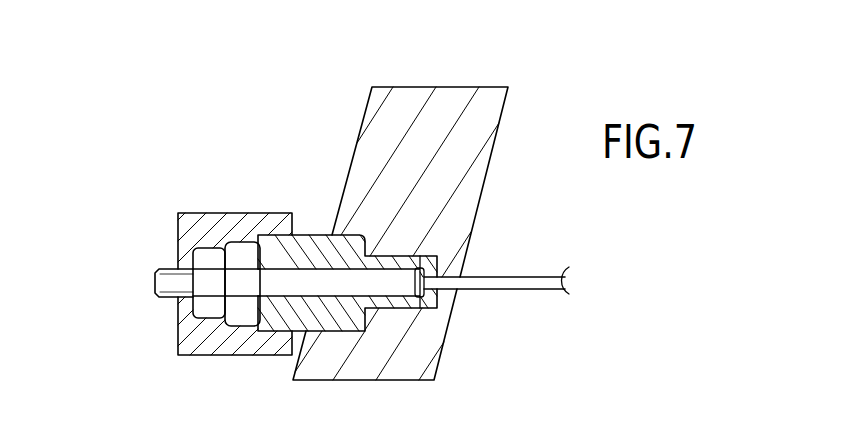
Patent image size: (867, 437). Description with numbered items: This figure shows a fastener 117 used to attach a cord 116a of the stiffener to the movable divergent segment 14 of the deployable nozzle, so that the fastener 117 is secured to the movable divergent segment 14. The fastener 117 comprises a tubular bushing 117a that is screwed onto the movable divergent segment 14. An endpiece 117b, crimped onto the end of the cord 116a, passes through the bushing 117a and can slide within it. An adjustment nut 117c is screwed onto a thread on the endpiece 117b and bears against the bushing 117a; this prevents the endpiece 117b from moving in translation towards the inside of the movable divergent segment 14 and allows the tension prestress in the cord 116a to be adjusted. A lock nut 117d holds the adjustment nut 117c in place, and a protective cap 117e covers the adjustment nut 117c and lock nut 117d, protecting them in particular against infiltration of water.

The movable divergent segment 14 is at (360, 132).
The fastener 117 is at (210, 155).
The bushing 117a is at (312, 235).
The endpiece 117b is at (167, 282).
The adjustment nut 117c is at (240, 317).
The lock nut 117d is at (213, 307).
The protective cap 117e is at (183, 222).
The cord 116a is at (492, 288).